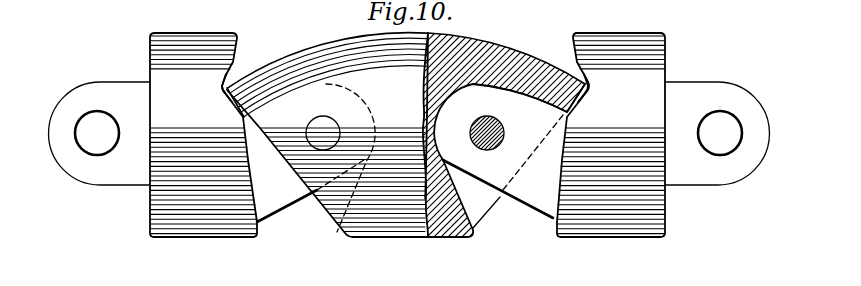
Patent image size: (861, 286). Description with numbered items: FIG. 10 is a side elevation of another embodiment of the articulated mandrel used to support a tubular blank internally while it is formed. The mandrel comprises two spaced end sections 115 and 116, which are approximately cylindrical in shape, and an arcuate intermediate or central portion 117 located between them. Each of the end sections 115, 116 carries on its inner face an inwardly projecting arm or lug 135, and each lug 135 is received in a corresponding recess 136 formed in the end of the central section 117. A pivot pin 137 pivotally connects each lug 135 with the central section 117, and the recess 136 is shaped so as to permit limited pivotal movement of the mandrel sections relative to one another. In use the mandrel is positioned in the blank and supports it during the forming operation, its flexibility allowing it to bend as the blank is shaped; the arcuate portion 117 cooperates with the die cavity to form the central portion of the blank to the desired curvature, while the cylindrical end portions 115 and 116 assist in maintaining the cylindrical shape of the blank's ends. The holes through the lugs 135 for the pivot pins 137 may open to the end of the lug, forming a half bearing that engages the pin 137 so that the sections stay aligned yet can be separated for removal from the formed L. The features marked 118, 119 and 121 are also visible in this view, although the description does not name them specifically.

The end section 115 is at (180, 42).
The end section 116 is at (610, 35).
The arcuate intermediate or central portion 117 is at (400, 245).
The shoulder notch 118 is at (230, 90).
The curved spring band 119 is at (231, 71).
The eye lug 121 is at (97, 173).
The inwardly projecting arm or lug 135 is at (290, 197).
The recess 136 is at (477, 212).
The pivot pin 137 is at (318, 123).